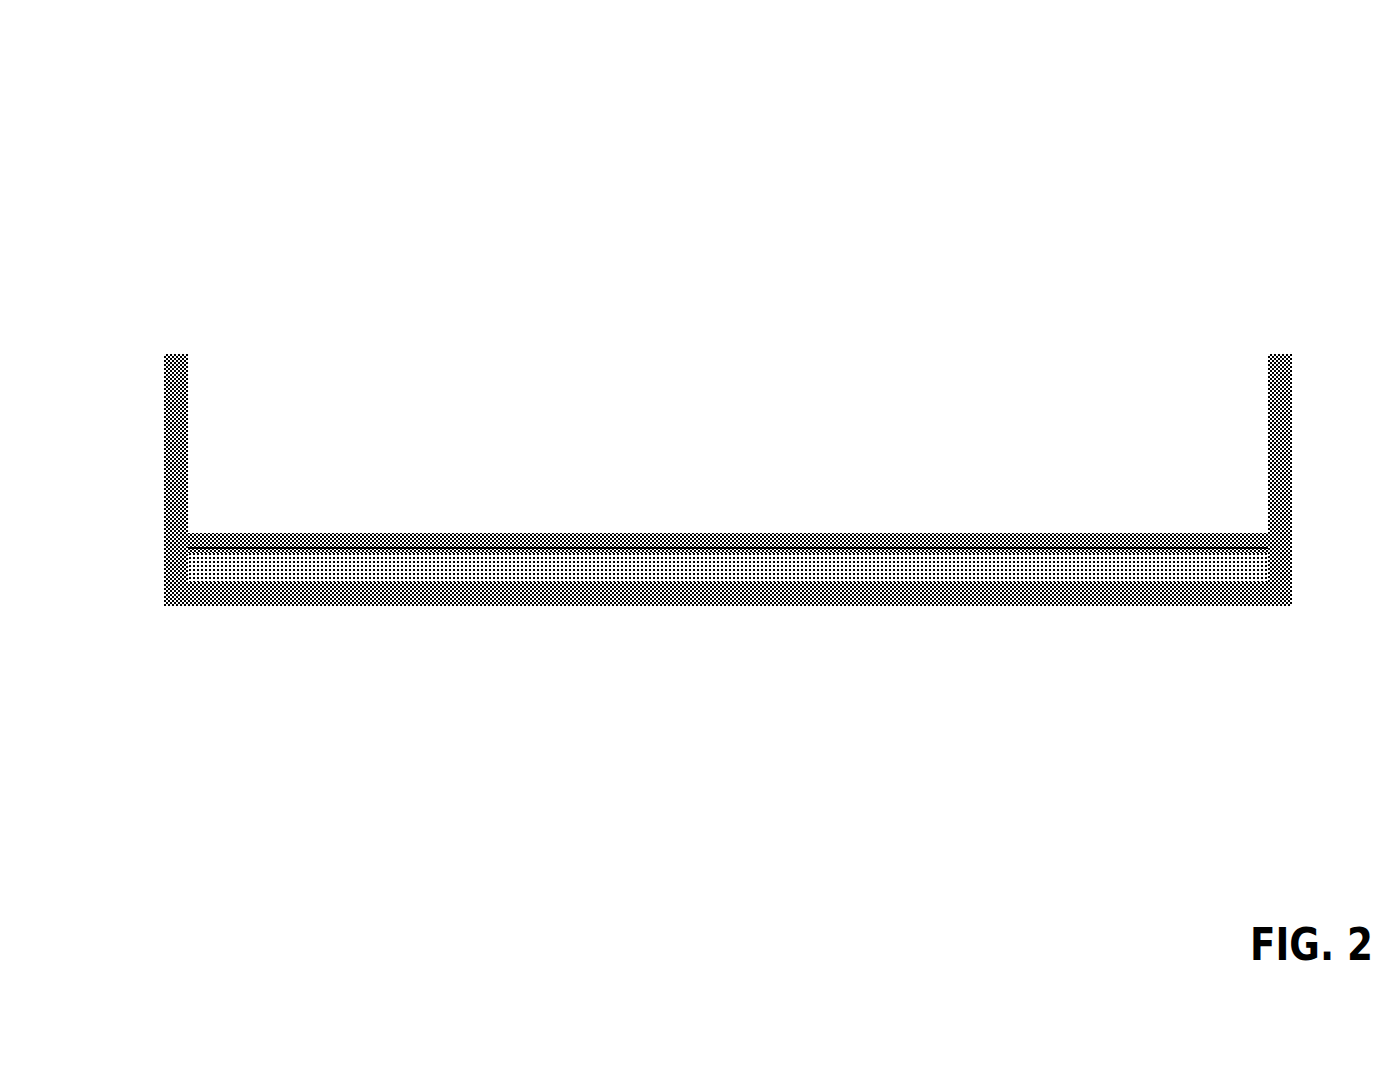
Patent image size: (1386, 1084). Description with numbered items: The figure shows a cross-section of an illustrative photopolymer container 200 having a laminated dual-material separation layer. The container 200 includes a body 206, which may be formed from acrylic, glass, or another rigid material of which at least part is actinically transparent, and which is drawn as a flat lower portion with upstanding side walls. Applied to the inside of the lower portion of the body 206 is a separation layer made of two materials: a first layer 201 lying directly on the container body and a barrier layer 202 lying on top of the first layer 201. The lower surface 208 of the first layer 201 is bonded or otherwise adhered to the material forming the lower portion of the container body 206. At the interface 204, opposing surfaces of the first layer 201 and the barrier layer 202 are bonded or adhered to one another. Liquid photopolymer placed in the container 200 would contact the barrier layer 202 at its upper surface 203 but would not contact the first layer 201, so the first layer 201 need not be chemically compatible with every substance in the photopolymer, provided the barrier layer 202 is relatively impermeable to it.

The container 200 is at (182, 72).
The first layer 201 is at (1232, 562).
The barrier layer 202 is at (1200, 540).
The surface of the barrier layer 203 is at (548, 532).
The interface between the first layer and the barrier layer 204 is at (888, 548).
The container body 206 is at (175, 415).
The surface of the first layer 208 is at (217, 582).